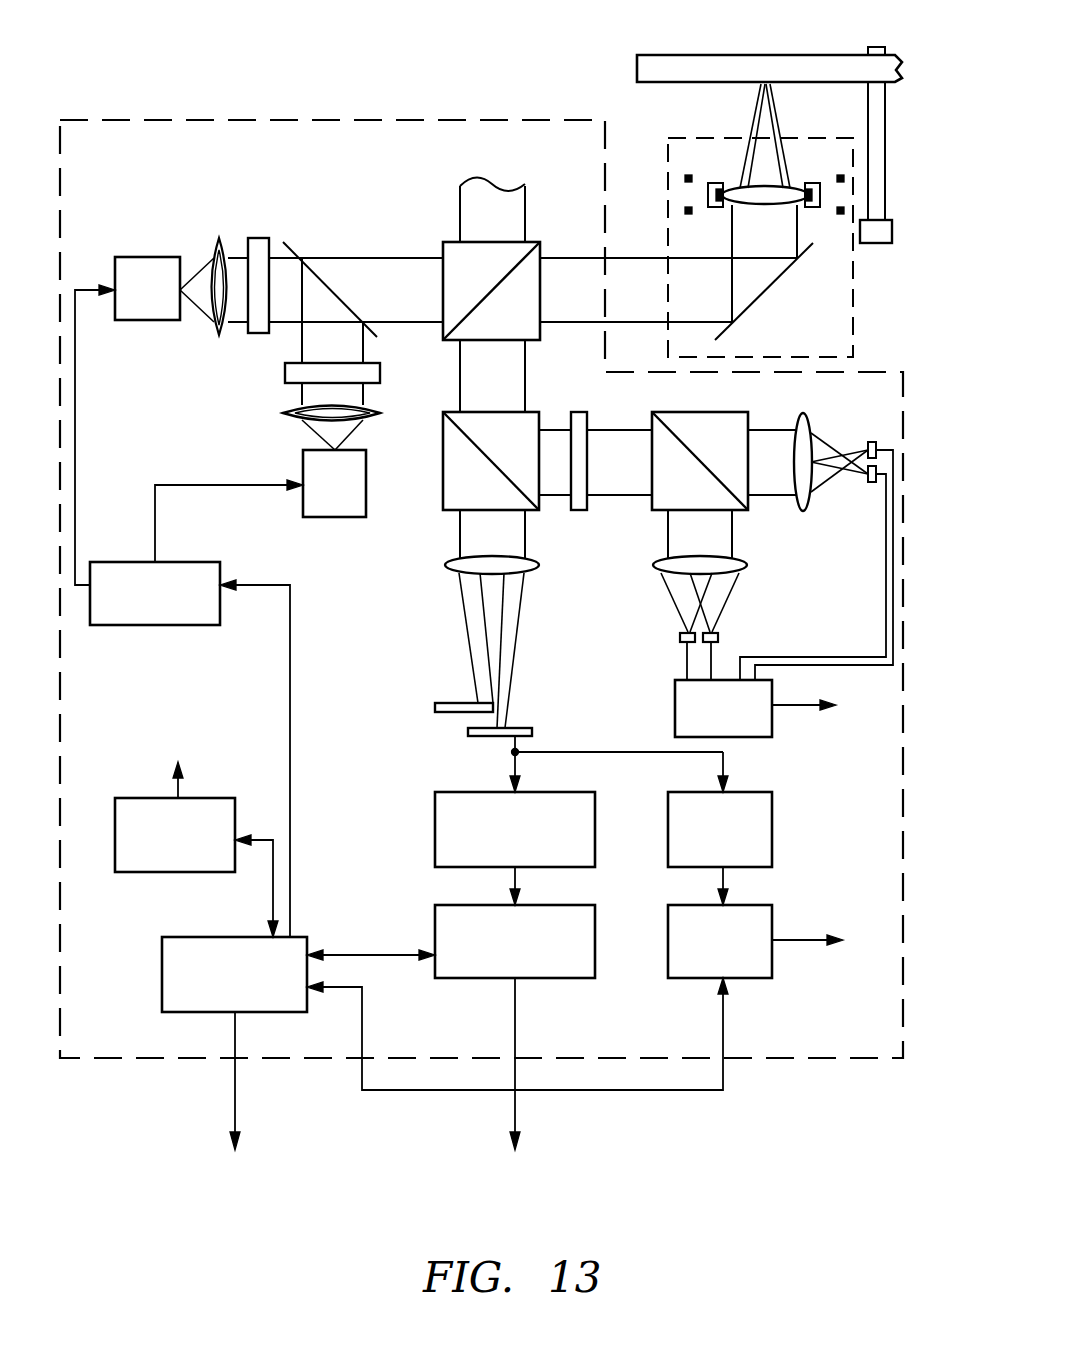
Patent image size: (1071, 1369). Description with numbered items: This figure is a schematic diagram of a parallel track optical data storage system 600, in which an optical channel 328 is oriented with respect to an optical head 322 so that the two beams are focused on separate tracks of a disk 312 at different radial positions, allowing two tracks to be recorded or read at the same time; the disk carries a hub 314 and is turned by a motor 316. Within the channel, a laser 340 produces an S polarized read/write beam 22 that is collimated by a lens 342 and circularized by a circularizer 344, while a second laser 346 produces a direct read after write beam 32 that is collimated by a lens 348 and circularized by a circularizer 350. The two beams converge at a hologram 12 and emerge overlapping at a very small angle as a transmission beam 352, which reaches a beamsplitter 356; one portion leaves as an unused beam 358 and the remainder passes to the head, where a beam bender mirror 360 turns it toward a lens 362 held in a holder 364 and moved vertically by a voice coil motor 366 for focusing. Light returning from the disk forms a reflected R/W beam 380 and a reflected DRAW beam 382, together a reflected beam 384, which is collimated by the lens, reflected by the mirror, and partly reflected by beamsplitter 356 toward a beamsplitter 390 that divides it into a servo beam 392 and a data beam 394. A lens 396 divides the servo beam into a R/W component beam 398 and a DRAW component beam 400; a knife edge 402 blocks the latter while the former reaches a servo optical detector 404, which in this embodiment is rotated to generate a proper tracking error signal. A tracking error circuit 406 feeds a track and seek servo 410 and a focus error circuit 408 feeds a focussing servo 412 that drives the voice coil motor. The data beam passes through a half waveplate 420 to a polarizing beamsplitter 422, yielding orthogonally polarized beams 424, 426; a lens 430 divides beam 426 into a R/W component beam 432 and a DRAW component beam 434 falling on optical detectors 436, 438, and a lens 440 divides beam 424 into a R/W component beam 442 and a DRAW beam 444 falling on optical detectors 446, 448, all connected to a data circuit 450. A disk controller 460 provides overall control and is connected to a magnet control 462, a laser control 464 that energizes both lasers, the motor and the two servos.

The optical channel 328 is at (200, 120).
The optical head 322 is at (668, 152).
The disk 312 is at (637, 70).
The disk hub 314 is at (876, 47).
The motor 316 is at (880, 243).
The read/write beam 22 is at (757, 112).
The DRAW beam 32 is at (776, 112).
The reflected R/W beam 380 is at (753, 137).
The reflected DRAW beam 382 is at (779, 137).
The lens 362 is at (733, 212).
The holder 364 is at (712, 183).
The voice coil motor 366 is at (684, 207).
The circularizer 350 is at (732, 250).
The beam bender mirror 360 is at (740, 322).
The reflected beam 384 is at (806, 246).
The laser 340 is at (148, 257).
The lens 342 is at (212, 240).
The circularizer 344 is at (258, 238).
The transmission beam 352 is at (388, 258).
The hologram 12 is at (285, 245).
The beam 358 is at (460, 184).
The beamsplitter 356 is at (545, 242).
The lens 348 is at (290, 412).
The laser 346 is at (303, 480).
The beamsplitter 390 is at (443, 455).
The data beam 394 is at (555, 430).
The half waveplate 420 is at (580, 511).
The polarizing beamsplitter 422 is at (652, 511).
The polarized beam 424 is at (776, 492).
The polarized beam 426 is at (732, 540).
The lens 440 is at (800, 414).
The R/W component beam 442 is at (857, 490).
The DRAW beam 444 is at (868, 442).
The optical detector 448 is at (876, 466).
The optical detector 446 is at (881, 483).
The servo beam 392 is at (460, 550).
The lens 396 is at (450, 568).
The R/W component beam 398 is at (518, 636).
The DRAW component beam 400 is at (468, 656).
The knife edge 402 is at (450, 703).
The servo optical detector 404 is at (525, 728).
The lens 430 is at (660, 566).
The R/W component beam 432 is at (732, 571).
The DRAW component beam 434 is at (676, 610).
The optical detector 436 is at (720, 630).
The optical detector 438 is at (680, 642).
The data circuit 450 is at (675, 702).
The laser control 464 is at (190, 625).
The magnet control 462 is at (200, 872).
The disk controller 460 is at (235, 937).
The tracking error circuit 406 is at (598, 792).
The track and seek servo 410 is at (598, 905).
The focus error circuit 408 is at (783, 792).
The focussing servo 412 is at (783, 905).
The parallel track optical data storage system 600 is at (338, 1228).